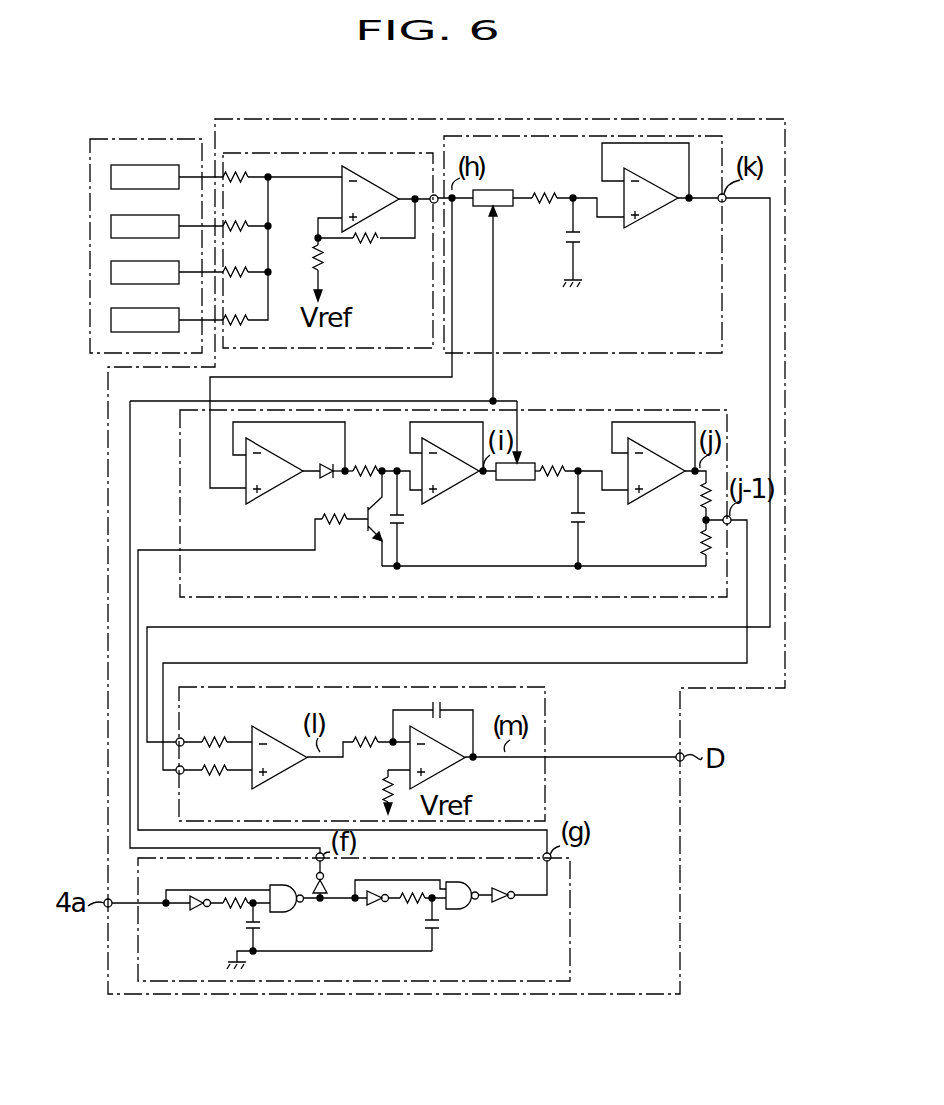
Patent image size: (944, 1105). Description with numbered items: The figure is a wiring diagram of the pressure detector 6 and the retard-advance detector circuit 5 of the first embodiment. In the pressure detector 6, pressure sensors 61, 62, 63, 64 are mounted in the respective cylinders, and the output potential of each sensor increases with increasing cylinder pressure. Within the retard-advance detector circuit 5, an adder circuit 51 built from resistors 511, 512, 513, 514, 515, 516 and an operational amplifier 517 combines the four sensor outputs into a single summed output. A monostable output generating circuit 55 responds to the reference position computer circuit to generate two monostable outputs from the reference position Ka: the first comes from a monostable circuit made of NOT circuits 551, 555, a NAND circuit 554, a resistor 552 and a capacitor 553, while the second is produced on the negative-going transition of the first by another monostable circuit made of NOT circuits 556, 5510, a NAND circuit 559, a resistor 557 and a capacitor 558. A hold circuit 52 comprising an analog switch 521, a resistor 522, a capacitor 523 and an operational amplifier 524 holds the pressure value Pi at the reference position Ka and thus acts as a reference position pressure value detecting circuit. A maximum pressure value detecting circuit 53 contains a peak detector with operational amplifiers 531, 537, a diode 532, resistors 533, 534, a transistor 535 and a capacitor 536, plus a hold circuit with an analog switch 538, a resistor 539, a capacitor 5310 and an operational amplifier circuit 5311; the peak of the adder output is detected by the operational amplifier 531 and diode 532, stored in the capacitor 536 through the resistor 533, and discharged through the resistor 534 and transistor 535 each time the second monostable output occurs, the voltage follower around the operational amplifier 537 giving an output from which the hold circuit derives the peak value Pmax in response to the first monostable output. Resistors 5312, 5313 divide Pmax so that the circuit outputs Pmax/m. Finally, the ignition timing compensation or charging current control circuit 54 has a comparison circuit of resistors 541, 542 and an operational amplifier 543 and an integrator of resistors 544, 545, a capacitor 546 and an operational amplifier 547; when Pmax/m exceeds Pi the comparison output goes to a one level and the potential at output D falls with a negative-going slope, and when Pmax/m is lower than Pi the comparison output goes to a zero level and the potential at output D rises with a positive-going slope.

The retard-advance detector circuit 5 is at (316, 119).
The pressure detector 6 is at (165, 138).
The adder circuit 51 is at (423, 152).
The hold circuit 52 is at (600, 136).
The maximum pressure value detecting circuit 53 is at (178, 438).
The ignition timing compensation circuit 54 is at (547, 740).
The monostable output generating circuit 55 is at (200, 982).
The pressure sensor 61 is at (111, 177).
The pressure sensor 62 is at (111, 226).
The pressure sensor 63 is at (111, 272).
The pressure sensor 64 is at (111, 320).
The resistor 511 is at (237, 183).
The resistor 512 is at (237, 232).
The resistor 513 is at (237, 278).
The resistor 514 is at (240, 326).
The resistor 515 is at (314, 250).
The resistor 516 is at (365, 246).
The operational amplifier 517 is at (360, 180).
The analog switch 521 is at (497, 190).
The resistor 522 is at (544, 205).
The capacitor 523 is at (582, 238).
The operational amplifier 524 is at (652, 220).
The operational amplifier 531 is at (246, 504).
The diode 532 is at (322, 464).
The resistor 533 is at (365, 468).
The resistor 534 is at (335, 516).
The transistor 535 is at (367, 530).
The capacitor 536 is at (405, 523).
The operational amplifier 537 is at (450, 501).
The analog switch 538 is at (515, 481).
The resistor 539 is at (551, 468).
The capacitor 5310 is at (572, 521).
The operational amplifier circuit 5311 is at (626, 496).
The resistor 5312 is at (692, 493).
The resistor 5313 is at (712, 558).
The resistor 541 is at (212, 735).
The resistor 542 is at (214, 777).
The operational amplifier 543 is at (262, 732).
The resistor 544 is at (362, 735).
The resistor 545 is at (380, 788).
The capacitor 546 is at (448, 708).
The operational amplifier 547 is at (448, 774).
The NOT circuit 551 is at (195, 912).
The resistor 552 is at (235, 893).
The capacitor 553 is at (248, 928).
The NAND circuit 554 is at (283, 915).
The NOT circuit 555 is at (328, 880).
The NOT circuit 556 is at (372, 908).
The resistor 557 is at (410, 905).
The capacitor 558 is at (439, 927).
The NAND circuit 559 is at (450, 881).
The NOT circuit 5510 is at (500, 906).